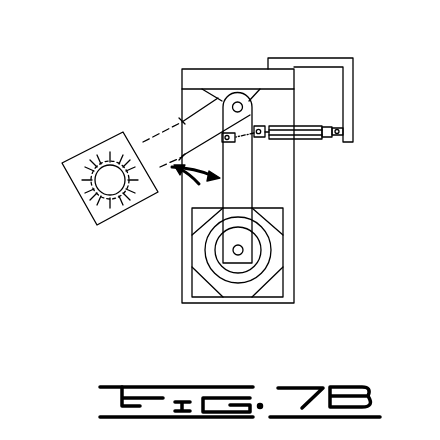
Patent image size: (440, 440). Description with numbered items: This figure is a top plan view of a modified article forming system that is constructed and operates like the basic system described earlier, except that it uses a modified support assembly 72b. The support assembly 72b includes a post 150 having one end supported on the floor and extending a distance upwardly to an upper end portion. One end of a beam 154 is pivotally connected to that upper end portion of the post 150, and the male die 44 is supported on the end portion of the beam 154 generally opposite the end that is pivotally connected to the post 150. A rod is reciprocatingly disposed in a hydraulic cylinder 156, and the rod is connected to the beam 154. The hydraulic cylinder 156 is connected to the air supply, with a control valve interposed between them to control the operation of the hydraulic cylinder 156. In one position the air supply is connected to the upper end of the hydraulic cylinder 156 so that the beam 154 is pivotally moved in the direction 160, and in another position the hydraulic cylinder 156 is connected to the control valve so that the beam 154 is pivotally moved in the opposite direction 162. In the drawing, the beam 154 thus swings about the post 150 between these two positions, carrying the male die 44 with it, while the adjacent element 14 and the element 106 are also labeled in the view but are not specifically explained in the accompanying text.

The workpiece gear 14 is at (86, 221).
The male die 44 is at (264, 257).
The modified support assembly 72b is at (178, 79).
The support bracket assembly 106 is at (247, 64).
The post 150 is at (200, 80).
The beam 154 is at (243, 197).
The hydraulic cylinder 156 is at (311, 125).
The direction 160 is at (197, 182).
The direction 162 is at (183, 158).